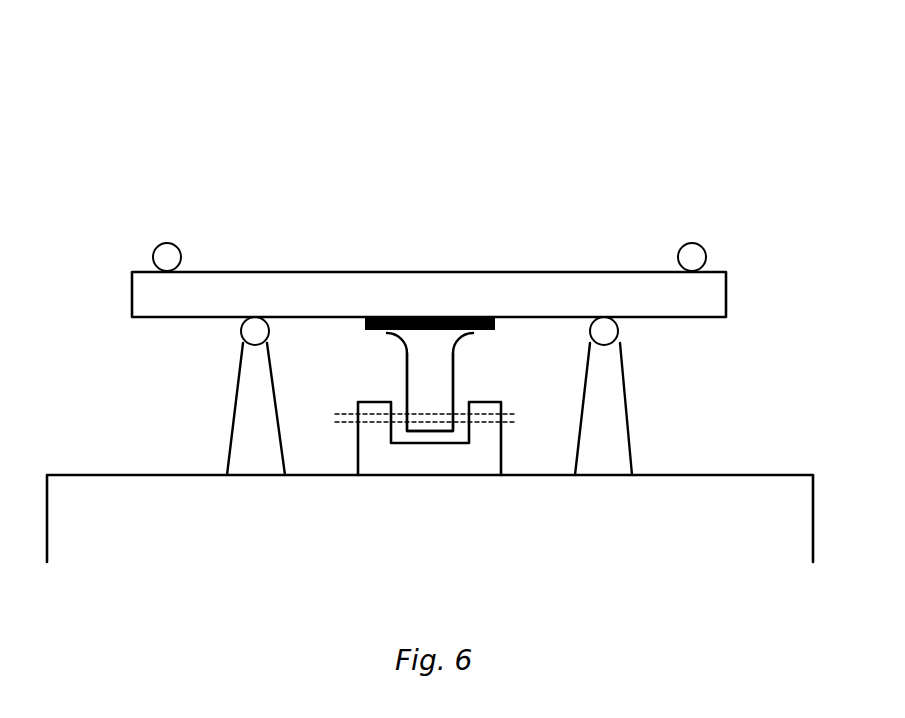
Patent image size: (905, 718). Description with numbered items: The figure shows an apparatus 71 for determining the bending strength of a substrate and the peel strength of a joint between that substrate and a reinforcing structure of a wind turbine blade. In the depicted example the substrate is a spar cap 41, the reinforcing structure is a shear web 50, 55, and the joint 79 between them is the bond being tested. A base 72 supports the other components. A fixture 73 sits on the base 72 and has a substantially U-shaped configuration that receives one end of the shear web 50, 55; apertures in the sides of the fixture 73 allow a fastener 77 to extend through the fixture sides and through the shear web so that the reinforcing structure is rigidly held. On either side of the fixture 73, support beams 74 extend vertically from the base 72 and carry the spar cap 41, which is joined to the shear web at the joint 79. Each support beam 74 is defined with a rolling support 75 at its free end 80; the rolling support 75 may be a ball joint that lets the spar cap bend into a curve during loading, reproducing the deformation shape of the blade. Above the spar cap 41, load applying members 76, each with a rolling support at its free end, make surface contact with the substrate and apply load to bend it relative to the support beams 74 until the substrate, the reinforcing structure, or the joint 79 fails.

The apparatus 71 is at (637, 117).
The spar cap 41 is at (207, 292).
The load applying member 76 is at (706, 256).
The free end 80 is at (271, 339).
The joint 79 is at (432, 316).
The shear web 50 is at (435, 386).
The shear web 55 is at (435, 386).
The rolling support 75 is at (256, 332).
The support beam 74 is at (612, 448).
The base 72 is at (140, 510).
The fixture 73 is at (435, 463).
The fastener 77 is at (337, 426).